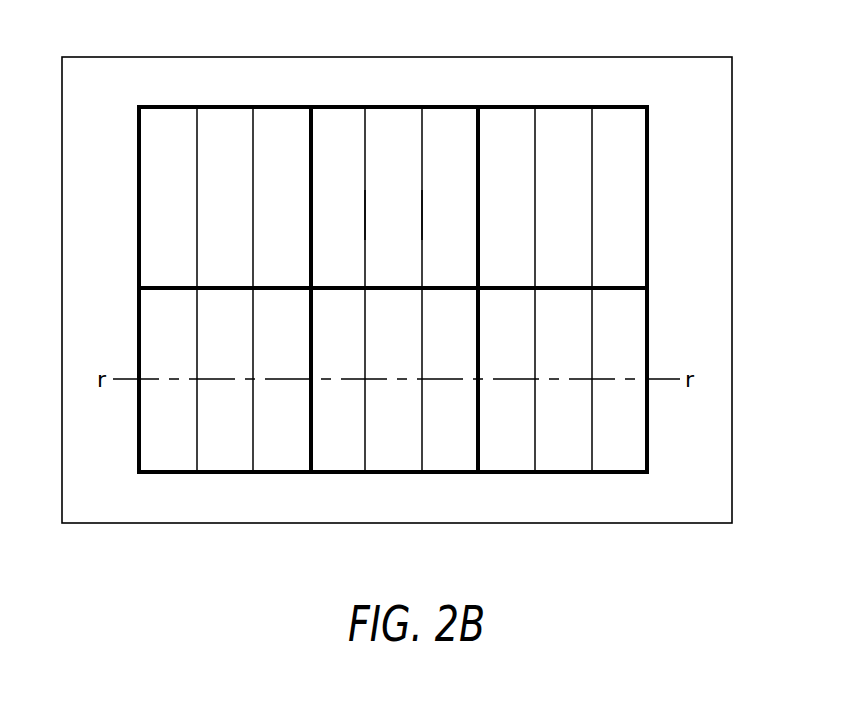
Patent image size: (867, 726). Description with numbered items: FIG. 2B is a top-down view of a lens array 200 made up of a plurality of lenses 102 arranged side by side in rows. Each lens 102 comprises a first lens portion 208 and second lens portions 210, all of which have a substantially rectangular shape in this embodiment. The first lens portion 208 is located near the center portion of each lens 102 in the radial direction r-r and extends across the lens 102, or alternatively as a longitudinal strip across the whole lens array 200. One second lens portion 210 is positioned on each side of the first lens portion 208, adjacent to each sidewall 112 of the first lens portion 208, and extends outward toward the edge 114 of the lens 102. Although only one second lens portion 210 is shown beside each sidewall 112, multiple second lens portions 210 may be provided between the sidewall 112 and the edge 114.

The lens array 200 is at (741, 207).
The lens 102 is at (138, 225).
The second lens portion 210 is at (159, 117).
The first lens portion 208 is at (223, 118).
The sidewall 112 is at (364, 214).
The edge 114 is at (309, 253).